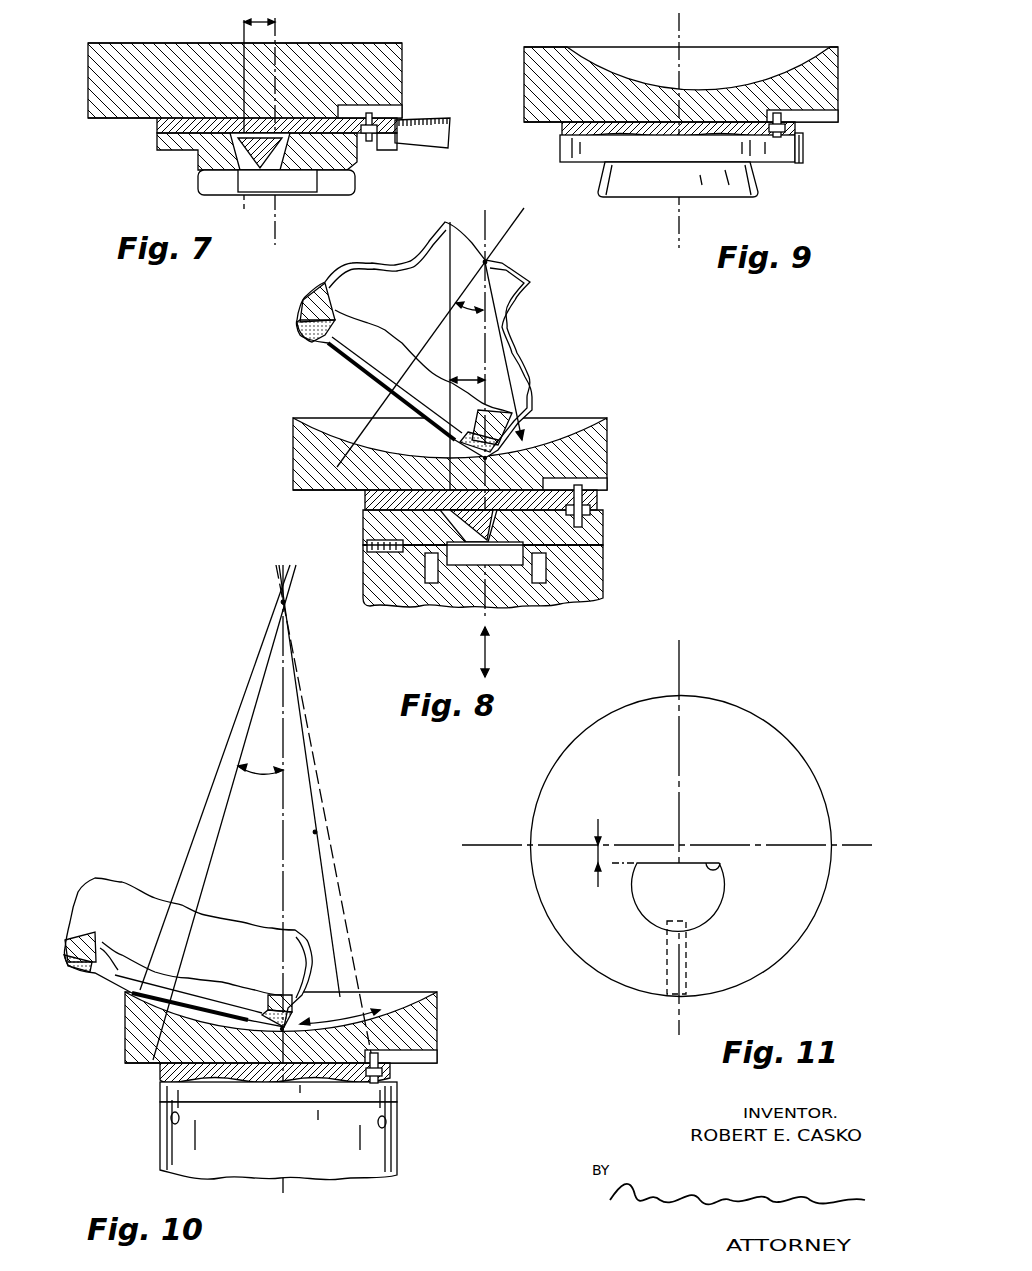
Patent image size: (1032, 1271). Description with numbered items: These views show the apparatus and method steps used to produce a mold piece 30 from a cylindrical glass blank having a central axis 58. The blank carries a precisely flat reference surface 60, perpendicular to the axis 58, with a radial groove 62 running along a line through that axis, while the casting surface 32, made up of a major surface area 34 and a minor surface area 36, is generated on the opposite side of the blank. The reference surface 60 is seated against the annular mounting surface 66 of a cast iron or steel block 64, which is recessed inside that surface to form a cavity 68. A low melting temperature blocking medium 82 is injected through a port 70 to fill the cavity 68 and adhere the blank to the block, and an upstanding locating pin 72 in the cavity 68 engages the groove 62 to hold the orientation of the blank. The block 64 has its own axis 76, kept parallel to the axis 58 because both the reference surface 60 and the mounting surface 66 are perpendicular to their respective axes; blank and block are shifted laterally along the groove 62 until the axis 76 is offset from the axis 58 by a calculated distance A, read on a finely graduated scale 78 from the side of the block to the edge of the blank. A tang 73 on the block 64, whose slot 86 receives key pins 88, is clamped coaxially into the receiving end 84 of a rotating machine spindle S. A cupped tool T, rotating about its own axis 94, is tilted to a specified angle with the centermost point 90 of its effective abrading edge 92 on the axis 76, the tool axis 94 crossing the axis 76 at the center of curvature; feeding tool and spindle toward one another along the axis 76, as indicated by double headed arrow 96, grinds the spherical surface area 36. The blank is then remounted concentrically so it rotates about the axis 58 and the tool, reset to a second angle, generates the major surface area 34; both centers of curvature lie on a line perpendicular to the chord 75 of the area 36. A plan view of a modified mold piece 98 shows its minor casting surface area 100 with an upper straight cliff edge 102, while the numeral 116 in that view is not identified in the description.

In FIG. 7, the mold piece 30 is at (402, 47).
In FIG. 9, the mold piece 30 is at (838, 62).
In FIG. 8, the mold piece 30 is at (612, 424).
In FIG. 10, the mold piece 30 is at (440, 996).
In FIG. 7, the casting surface 32 is at (365, 43).
In FIG. 10, the major surface area 34 is at (208, 1014).
In FIG. 10, the minor surface area 36 is at (373, 1023).
In FIG. 7, the central axis 58 is at (244, 40).
In FIG. 9, the central axis 58 is at (679, 42).
In FIG. 8, the central axis 58 is at (450, 222).
In FIG. 10, the central axis 58 is at (283, 862).
In FIG. 7, the reference surface 60 is at (96, 118).
In FIG. 9, the reference surface 60 is at (524, 122).
In FIG. 8, the reference surface 60 is at (295, 490).
In FIG. 10, the reference surface 60 is at (128, 1063).
In FIG. 7, the radial groove 62 is at (395, 108).
In FIG. 9, the radial groove 62 is at (838, 114).
In FIG. 8, the radial groove 62 is at (610, 478).
In FIG. 10, the radial groove 62 is at (440, 1053).
In FIG. 7, the block 64 is at (198, 172).
In FIG. 9, the block 64 is at (590, 170).
In FIG. 8, the block 64 is at (400, 560).
In FIG. 10, the block 64 is at (395, 1096).
In FIG. 7, the annular mounting surface 66 is at (128, 118).
In FIG. 9, the annular mounting surface 66 is at (560, 136).
In FIG. 8, the annular mounting surface 66 is at (362, 490).
In FIG. 10, the annular mounting surface 66 is at (160, 1066).
In FIG. 7, the cavity 68 is at (178, 152).
In FIG. 9, the cavity 68 is at (645, 128).
In FIG. 8, the cavity 68 is at (368, 512).
In FIG. 10, the cavity 68 is at (160, 1082).
In FIG. 7, the port 70 is at (396, 151).
In FIG. 9, the port 70 is at (800, 130).
In FIG. 8, the port 70 is at (592, 500).
In FIG. 7, the locating pin 72 is at (371, 142).
In FIG. 9, the locating pin 72 is at (785, 155).
In FIG. 8, the locating pin 72 is at (596, 512).
In FIG. 10, the locating pin 72 is at (385, 1075).
In FIG. 7, the tang 73 is at (286, 192).
In FIG. 9, the tang 73 is at (702, 195).
In FIG. 8, the tang 73 is at (567, 544).
In FIG. 10, the chord 75 is at (365, 1007).
In FIG. 7, the block axis 76 is at (277, 98).
In FIG. 9, the block axis 76 is at (679, 130).
In FIG. 8, the block axis 76 is at (485, 224).
In FIG. 10, the block axis 76 is at (283, 879).
In FIG. 7, the scale 78 is at (430, 148).
In FIG. 7, the blocking medium 82 is at (230, 118).
In FIG. 9, the blocking medium 82 is at (605, 128).
In FIG. 10, the blocking medium 82 is at (220, 1078).
In FIG. 8, the receiving end 84 is at (368, 546).
In FIG. 10, the receiving end 84 is at (318, 1110).
In FIG. 7, the slot 86 is at (222, 192).
In FIG. 8, the slot 86 is at (425, 566).
In FIG. 8, the pins 88 is at (430, 583).
In FIG. 8, the centermost point 90 is at (490, 462).
In FIG. 10, the centermost point 90 is at (280, 1031).
In FIG. 8, the effective abrading edge 92 is at (372, 378).
In FIG. 10, the effective abrading edge 92 is at (92, 982).
In FIG. 8, the tool axis 94 is at (414, 345).
In FIG. 10, the tool axis 94 is at (203, 898).
In FIG. 8, the double headed arrow 96 is at (488, 645).
In FIG. 11, the mold piece 98 is at (745, 698).
In FIG. 11, the minor casting surface area 100 is at (652, 913).
In FIG. 11, the upper straight cliff edge 102 is at (721, 867).
In FIG. 11, the face of disc 116 is at (788, 769).